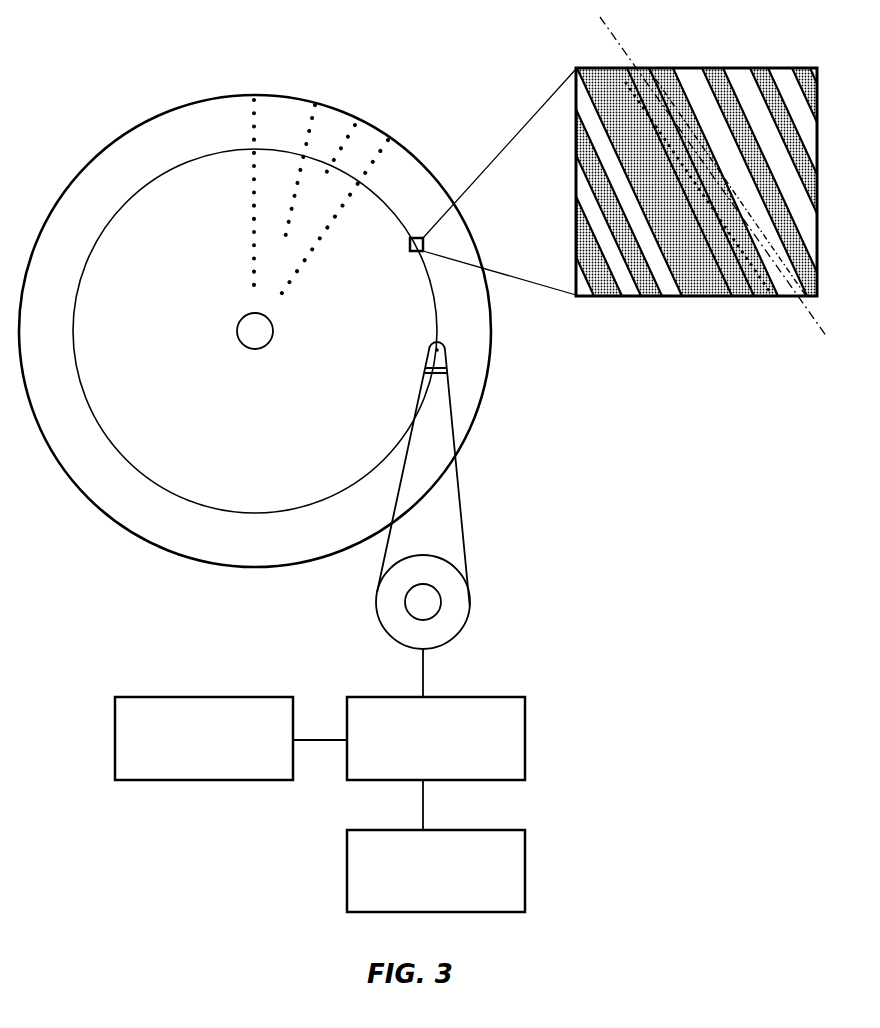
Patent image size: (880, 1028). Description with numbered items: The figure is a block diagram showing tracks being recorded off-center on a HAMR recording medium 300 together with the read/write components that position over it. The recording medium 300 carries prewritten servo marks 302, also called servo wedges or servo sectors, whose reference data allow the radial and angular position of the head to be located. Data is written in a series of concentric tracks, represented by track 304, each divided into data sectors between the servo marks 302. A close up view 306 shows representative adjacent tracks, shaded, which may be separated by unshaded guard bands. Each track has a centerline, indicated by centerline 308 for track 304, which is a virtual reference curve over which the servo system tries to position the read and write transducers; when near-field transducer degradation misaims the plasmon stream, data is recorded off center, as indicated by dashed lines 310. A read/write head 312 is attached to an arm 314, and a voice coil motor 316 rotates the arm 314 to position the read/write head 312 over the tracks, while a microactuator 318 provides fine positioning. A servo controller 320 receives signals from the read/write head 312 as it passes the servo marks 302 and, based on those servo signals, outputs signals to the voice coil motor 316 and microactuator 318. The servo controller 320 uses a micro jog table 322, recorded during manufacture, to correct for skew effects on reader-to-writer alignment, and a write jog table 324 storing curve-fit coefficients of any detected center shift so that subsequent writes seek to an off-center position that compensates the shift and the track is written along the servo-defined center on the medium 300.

The HAMR recording medium 300 is at (215, 95).
The servo marks 302 is at (357, 126).
The track 304 is at (271, 514).
The close up view 306 is at (592, 296).
The centerline 308 is at (600, 20).
The dashed lines 310 is at (605, 80).
The read/write head 312 is at (430, 346).
The arm 314 is at (458, 513).
The voice coil motor 316 is at (470, 607).
The microactuator 318 is at (426, 371).
The servo controller 320 is at (528, 716).
The micro jog table 322 is at (528, 849).
The write jog table 324 is at (115, 736).